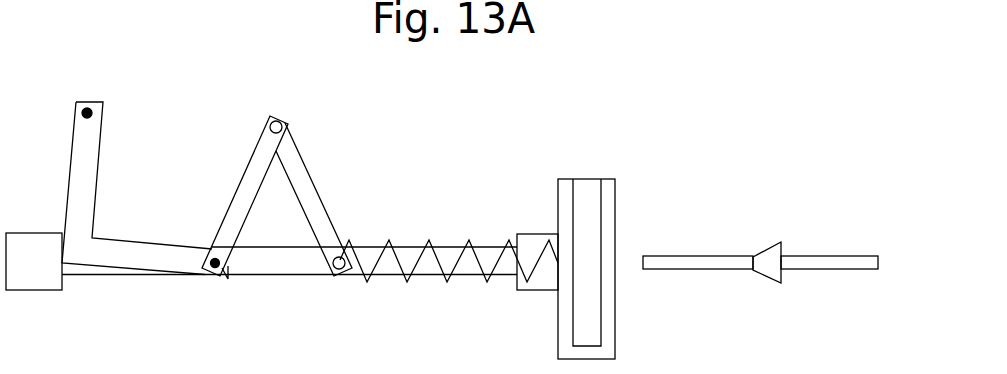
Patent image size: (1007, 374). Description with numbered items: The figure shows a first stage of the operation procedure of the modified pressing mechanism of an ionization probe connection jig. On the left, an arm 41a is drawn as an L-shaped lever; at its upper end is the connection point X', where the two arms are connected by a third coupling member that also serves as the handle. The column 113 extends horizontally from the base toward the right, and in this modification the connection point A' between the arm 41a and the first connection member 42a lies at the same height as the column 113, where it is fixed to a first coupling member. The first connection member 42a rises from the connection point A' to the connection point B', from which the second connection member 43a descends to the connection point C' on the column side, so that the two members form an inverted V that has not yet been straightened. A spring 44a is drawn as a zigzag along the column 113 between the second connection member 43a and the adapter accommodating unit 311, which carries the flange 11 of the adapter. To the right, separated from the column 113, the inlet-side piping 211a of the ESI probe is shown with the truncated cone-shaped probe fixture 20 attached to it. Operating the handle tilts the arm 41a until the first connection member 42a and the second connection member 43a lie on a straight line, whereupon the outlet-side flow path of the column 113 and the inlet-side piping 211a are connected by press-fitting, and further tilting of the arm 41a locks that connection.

The arm 41a is at (103, 122).
The connection point X' is at (73, 88).
The column 113 is at (283, 275).
The first connection member 42a is at (230, 205).
The second connection member 43a is at (310, 178).
The connection point A' is at (232, 290).
The pivot point B' is at (303, 119).
The pivot point C' is at (355, 287).
The spring 44a is at (428, 242).
The adapter accommodating unit 311 is at (558, 178).
The flange 11 is at (587, 178).
The inlet-side piping 211a is at (683, 270).
The probe fixture 20 is at (762, 277).